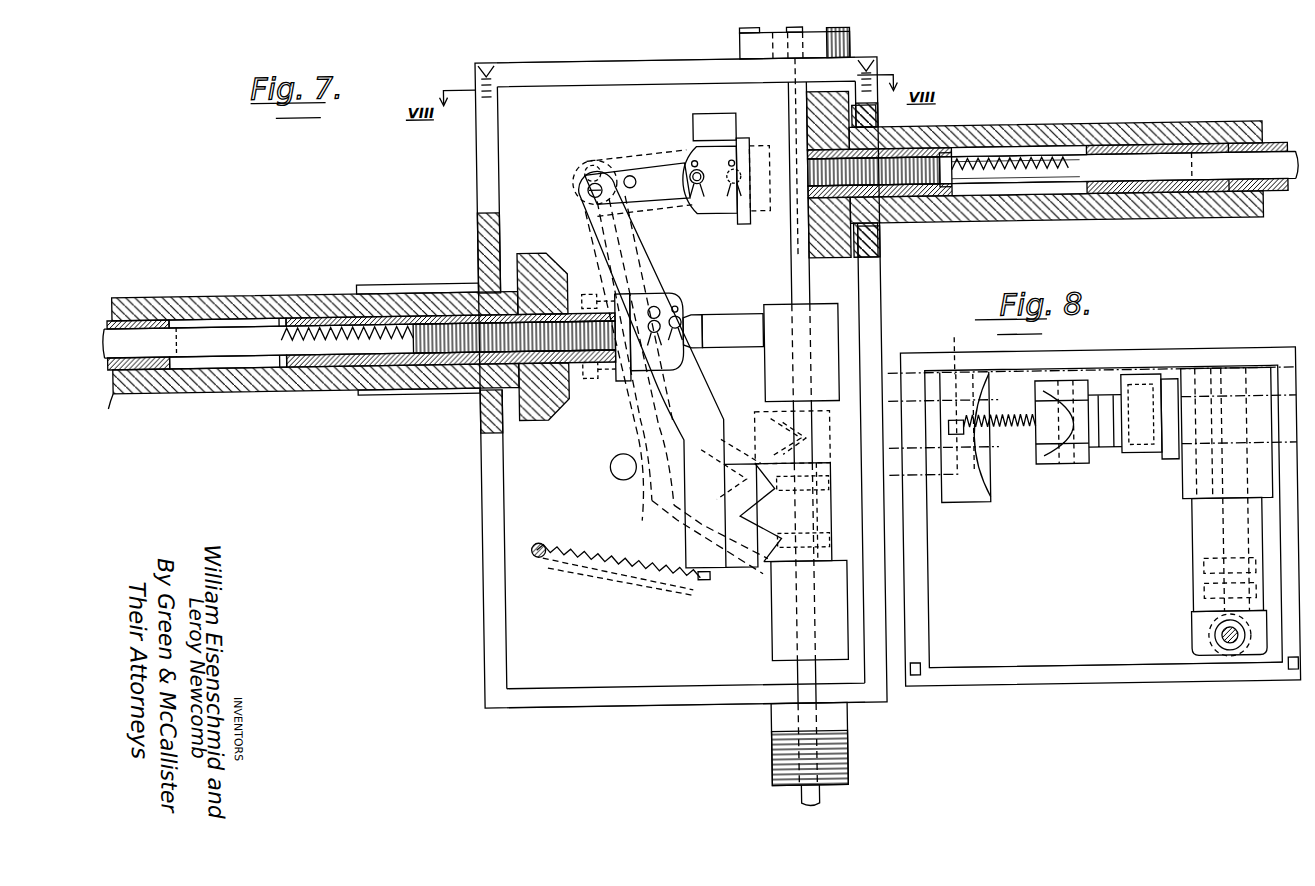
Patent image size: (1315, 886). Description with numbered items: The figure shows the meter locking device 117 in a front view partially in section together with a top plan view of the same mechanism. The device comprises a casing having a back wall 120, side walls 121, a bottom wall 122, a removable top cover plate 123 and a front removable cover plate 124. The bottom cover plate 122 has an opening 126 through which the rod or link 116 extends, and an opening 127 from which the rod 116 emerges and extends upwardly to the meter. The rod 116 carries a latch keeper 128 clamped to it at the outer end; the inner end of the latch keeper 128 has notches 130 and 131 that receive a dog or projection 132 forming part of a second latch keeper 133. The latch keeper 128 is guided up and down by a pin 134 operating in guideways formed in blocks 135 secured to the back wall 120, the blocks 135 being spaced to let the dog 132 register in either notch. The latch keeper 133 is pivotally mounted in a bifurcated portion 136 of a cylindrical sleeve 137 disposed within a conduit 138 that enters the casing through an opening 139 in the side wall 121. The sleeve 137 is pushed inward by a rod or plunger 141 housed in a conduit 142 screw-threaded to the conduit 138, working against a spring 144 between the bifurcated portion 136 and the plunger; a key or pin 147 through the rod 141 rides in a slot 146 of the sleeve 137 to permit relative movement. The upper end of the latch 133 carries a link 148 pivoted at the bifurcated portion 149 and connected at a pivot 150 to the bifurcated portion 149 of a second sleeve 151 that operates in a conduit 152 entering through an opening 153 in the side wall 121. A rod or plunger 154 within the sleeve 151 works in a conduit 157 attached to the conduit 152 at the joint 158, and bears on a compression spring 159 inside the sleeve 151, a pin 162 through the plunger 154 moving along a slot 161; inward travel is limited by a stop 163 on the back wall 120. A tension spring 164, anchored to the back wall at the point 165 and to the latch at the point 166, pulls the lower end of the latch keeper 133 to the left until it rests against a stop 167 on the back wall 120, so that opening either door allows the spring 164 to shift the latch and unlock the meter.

In FIG. 7, the rod or link 116 is at (792, 126).
In FIG. 8, the rod or link 116 is at (1228, 646).
In FIG. 7, the locking device 117 is at (446, 185).
In FIG. 8, the back wall 120 is at (1112, 351).
In FIG. 7, the side walls 121 is at (500, 182).
In FIG. 8, the side walls 121 is at (928, 555).
In FIG. 7, the bottom wall 122 is at (645, 708).
In FIG. 7, the top cover plate 123 is at (650, 58).
In FIG. 8, the front removable cover plate 124 is at (1060, 678).
In FIG. 7, the opening 126 is at (790, 685).
In FIG. 7, the opening 127 is at (786, 78).
In FIG. 8, the latch keeper 128 is at (1195, 545).
In FIG. 7, the notch 130 is at (757, 558).
In FIG. 7, the notch 131 is at (754, 426).
In FIG. 7, the dog or projection 132 is at (758, 526).
In FIG. 7, the latch keeper 133 is at (687, 388).
In FIG. 8, the pin 134 is at (1236, 400).
In FIG. 7, the blocks 135 is at (770, 306).
In FIG. 7, the bifurcated portion 136 is at (667, 306).
In FIG. 8, the bifurcated portion 136 is at (1068, 452).
In FIG. 7, the cylindrical sleeve 137 is at (442, 356).
In FIG. 7, the conduit 138 is at (263, 289).
In FIG. 8, the conduit 138 is at (931, 465).
In FIG. 7, the opening 139 is at (470, 282).
In FIG. 7, the rod or plunger 141 is at (188, 320).
In FIG. 7, the conduit 142 is at (112, 388).
In FIG. 7, the spring 144 is at (474, 352).
In FIG. 7, the slot 146 is at (310, 363).
In FIG. 7, the key or pin 147 is at (403, 361).
In FIG. 7, the link 148 is at (655, 172).
In FIG. 8, the link 148 is at (1073, 426).
In FIG. 7, the bifurcated portion 149 is at (592, 193).
In FIG. 8, the bifurcated portion 149 is at (1144, 458).
In FIG. 7, the pivot 150 is at (690, 165).
In FIG. 7, the sleeve 151 is at (951, 200).
In FIG. 7, the conduit 152 is at (992, 132).
In FIG. 7, the opening 153 is at (882, 112).
In FIG. 7, the rod or plunger 154 is at (1173, 210).
In FIG. 7, the conduit 157 is at (1272, 150).
In FIG. 7, the attachment 158 is at (1240, 215).
In FIG. 7, the compression spring 159 is at (921, 200).
In FIG. 7, the slot 161 is at (1038, 152).
In FIG. 7, the pin 162 is at (958, 152).
In FIG. 7, the stop 163 is at (708, 114).
In FIG. 7, the tension spring 164 is at (670, 589).
In FIG. 8, the tension spring 164 is at (1000, 456).
In FIG. 7, the spring anchor 165 is at (536, 557).
In FIG. 8, the spring anchor 165 is at (949, 347).
In FIG. 7, the spring attachment 166 is at (700, 583).
In FIG. 7, the stop 167 is at (612, 478).